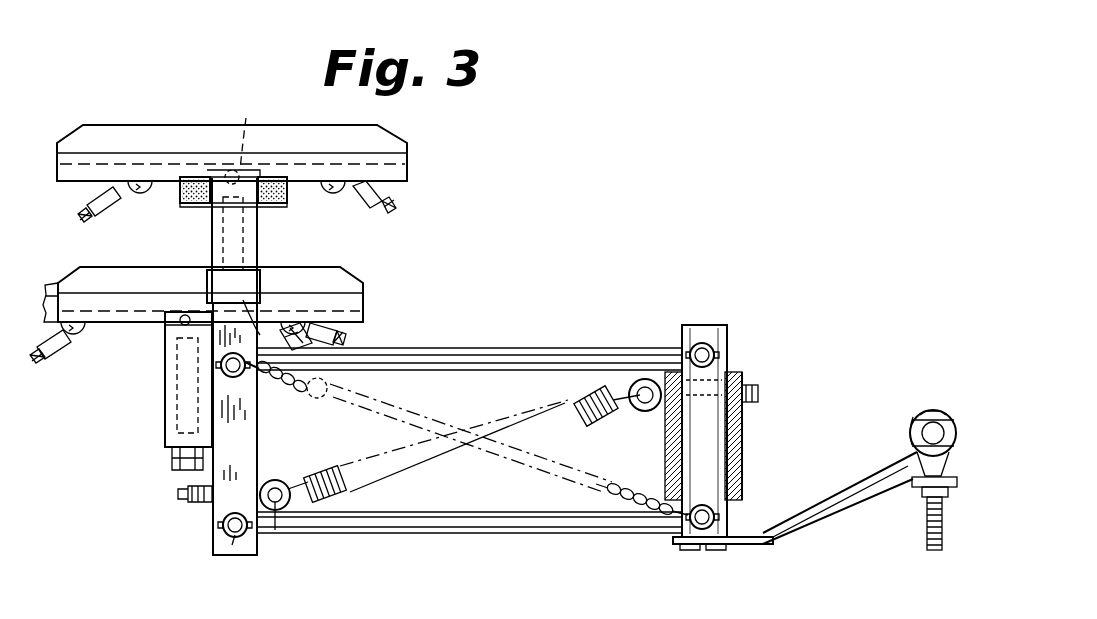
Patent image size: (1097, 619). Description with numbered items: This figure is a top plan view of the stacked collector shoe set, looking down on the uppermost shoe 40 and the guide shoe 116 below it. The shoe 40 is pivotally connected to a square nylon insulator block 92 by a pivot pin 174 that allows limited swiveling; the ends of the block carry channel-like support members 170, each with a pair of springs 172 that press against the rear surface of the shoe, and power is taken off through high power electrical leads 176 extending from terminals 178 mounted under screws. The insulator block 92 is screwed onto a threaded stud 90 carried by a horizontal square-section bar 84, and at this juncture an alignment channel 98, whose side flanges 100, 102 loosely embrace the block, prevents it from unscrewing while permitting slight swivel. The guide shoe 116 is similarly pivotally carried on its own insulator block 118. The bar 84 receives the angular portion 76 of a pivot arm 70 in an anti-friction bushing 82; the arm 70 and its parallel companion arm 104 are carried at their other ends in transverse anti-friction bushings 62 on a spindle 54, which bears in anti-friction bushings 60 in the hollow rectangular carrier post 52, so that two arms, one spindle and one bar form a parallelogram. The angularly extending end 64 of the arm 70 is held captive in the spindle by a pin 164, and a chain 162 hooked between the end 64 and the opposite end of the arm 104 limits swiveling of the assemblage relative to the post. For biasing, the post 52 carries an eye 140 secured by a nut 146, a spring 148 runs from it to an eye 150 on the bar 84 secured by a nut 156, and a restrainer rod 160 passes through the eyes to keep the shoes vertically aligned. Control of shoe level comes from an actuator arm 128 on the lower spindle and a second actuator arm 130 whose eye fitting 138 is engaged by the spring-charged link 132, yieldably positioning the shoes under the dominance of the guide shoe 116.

The uppermost shoe 40 is at (416, 136).
The pivot pin 174 is at (225, 140).
The springs 172 is at (180, 198).
The channel-like support member 170 is at (270, 203).
The terminals 178 is at (362, 200).
The high power electrical leads 176 is at (392, 214).
The insulator block 92 is at (258, 243).
The threaded studs 90 is at (222, 230).
The guide shoe 116 is at (108, 339).
The side flange of alignment channel 100 is at (207, 279).
The side flange of alignment channel 102 is at (261, 280).
The insulator block 118 is at (165, 394).
The horizontal square-section bar 84 is at (250, 458).
The alignment channel 98 is at (263, 324).
The anti-friction bushings 82 is at (240, 375).
The angular portion of pivot arm 76 is at (234, 540).
The nuts 156 is at (190, 504).
The chain 162 is at (312, 398).
The pivot arm 104 is at (460, 348).
The pivot arm 70 is at (530, 522).
The eye 150 is at (286, 480).
The restrainer rod 160 is at (276, 506).
The springs 148 is at (578, 395).
The eye 140 is at (628, 383).
The pins 164 is at (720, 516).
The anti-friction bushings 60 is at (668, 410).
The spindle 54 is at (705, 324).
The anti-friction bushings 62 is at (715, 350).
The nuts 146 is at (758, 385).
The carrier post 52 is at (744, 440).
The angularly extending end of pivot arm 64 is at (690, 548).
The actuator arm 128 is at (870, 468).
The second actuator arm 130 is at (852, 503).
The link 132 is at (934, 421).
The eye fitting 138 is at (915, 428).